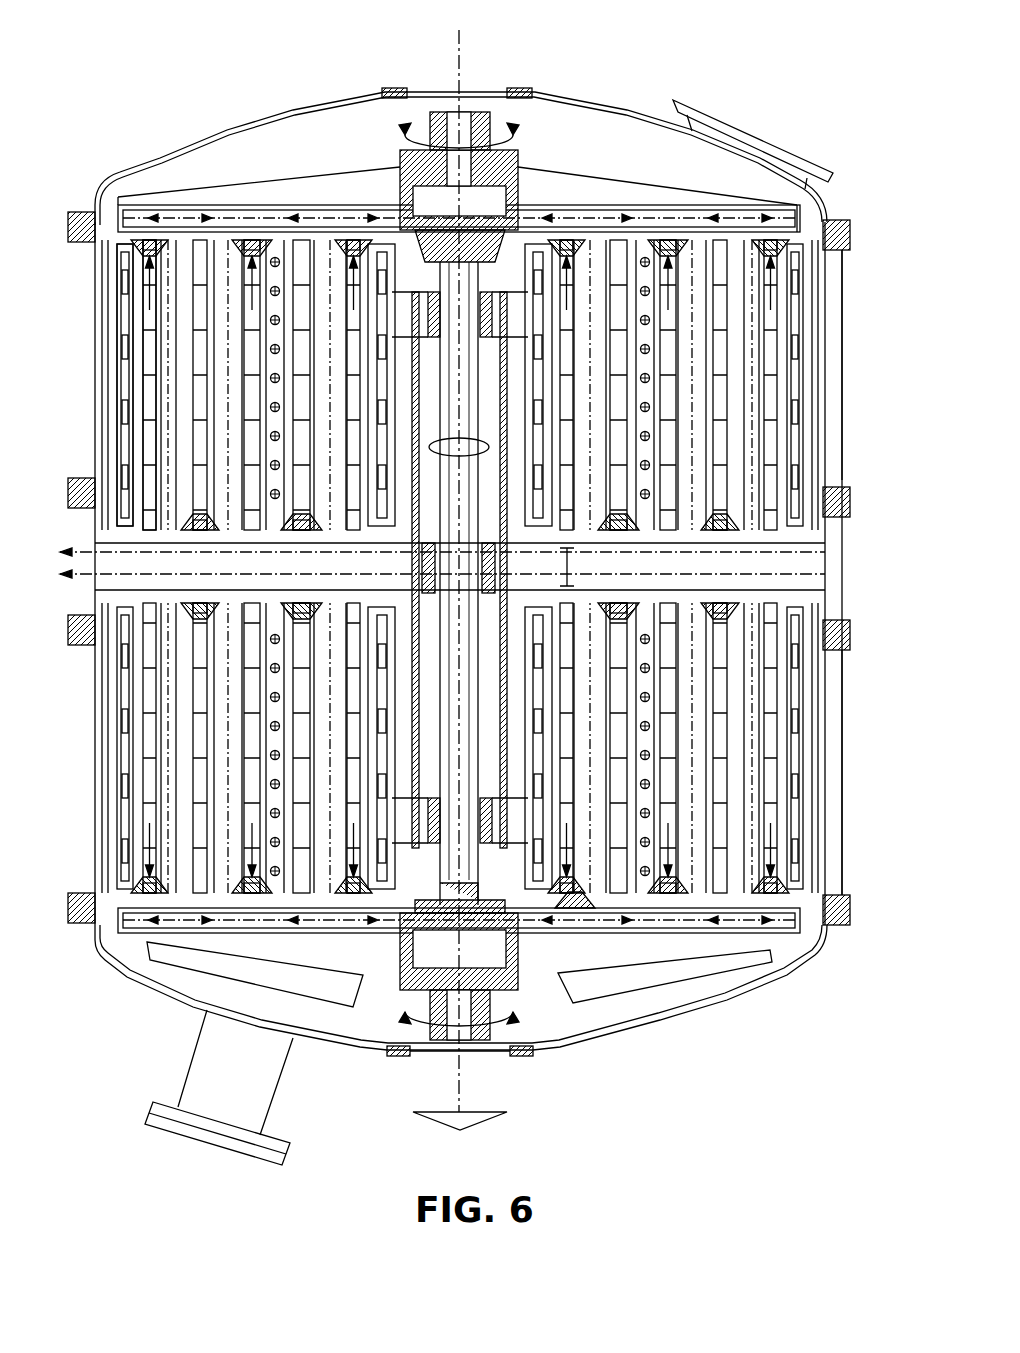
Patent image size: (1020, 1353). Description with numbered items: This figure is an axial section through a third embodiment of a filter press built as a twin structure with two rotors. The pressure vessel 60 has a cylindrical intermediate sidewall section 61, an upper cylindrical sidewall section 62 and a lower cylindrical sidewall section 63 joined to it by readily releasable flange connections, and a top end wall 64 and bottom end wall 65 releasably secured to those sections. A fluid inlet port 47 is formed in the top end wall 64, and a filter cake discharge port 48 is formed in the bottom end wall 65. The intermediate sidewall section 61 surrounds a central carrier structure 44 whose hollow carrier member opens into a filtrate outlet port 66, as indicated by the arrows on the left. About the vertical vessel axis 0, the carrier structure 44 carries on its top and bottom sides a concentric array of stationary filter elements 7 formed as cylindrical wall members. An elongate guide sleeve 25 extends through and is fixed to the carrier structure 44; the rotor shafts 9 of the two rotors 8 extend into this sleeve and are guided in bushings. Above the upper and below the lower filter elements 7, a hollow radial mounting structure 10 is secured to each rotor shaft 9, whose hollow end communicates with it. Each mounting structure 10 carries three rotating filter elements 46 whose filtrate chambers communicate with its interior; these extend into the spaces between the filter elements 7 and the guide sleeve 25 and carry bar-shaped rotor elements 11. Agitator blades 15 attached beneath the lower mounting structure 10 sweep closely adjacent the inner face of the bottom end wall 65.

The vessel axis 0 is at (462, 46).
The rotor 8 is at (545, 170).
The pressure vessel 60 is at (626, 106).
The hollow radial mounting structure 10 is at (657, 193).
The fluid inlet port 47 is at (745, 145).
The rotor shaft 9 is at (452, 297).
The top end wall 64 is at (222, 131).
The bar-shaped rotor element 11 is at (233, 253).
The filter element 46 is at (142, 360).
The filter element 7 is at (102, 437).
The filtrate outlet port 66 is at (70, 553).
The upper cylindrical sidewall section 62 is at (843, 438).
The cylindrical intermediate sidewall section 61 is at (845, 562).
The central carrier structure 44 is at (800, 585).
The lower cylindrical sidewall section 63 is at (843, 850).
The filter cake discharge port 48 is at (250, 1072).
The bottom end wall 65 is at (560, 1046).
The guide sleeve 25 is at (568, 895).
The agitator blade 15 is at (668, 968).